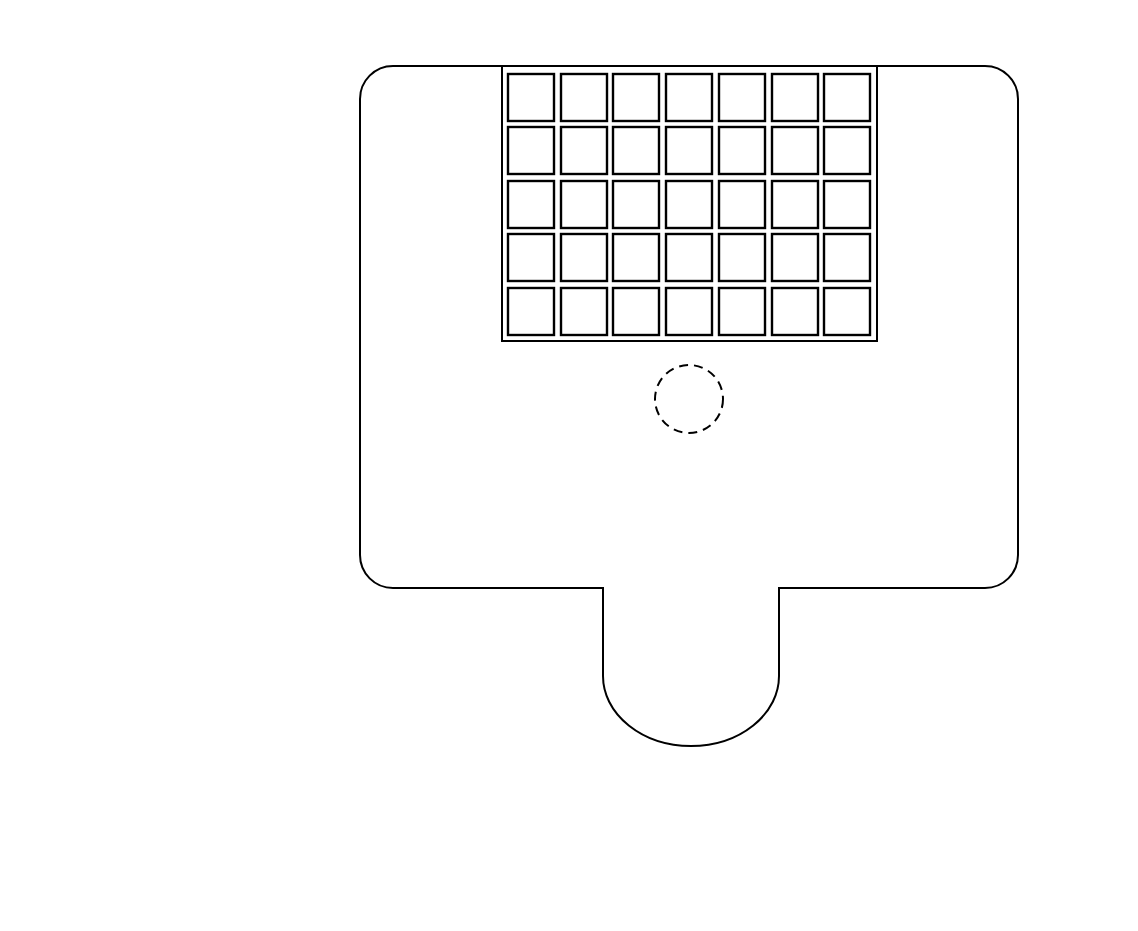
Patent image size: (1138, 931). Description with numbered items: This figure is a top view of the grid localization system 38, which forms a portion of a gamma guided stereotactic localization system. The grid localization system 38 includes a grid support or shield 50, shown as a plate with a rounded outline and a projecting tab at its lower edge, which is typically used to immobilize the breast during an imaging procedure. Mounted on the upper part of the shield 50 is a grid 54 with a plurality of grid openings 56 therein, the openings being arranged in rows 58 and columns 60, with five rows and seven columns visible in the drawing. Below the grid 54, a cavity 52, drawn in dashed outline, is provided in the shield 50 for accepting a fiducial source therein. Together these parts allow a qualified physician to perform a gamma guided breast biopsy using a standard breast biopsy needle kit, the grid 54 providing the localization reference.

The grid localization system 38 is at (268, 129).
The grid support or shield 50 is at (1018, 517).
The cavity 52 is at (700, 430).
The grid 54 is at (848, 341).
The grid openings 56 is at (847, 155).
The rows 58 is at (478, 262).
The columns 60 is at (530, 369).